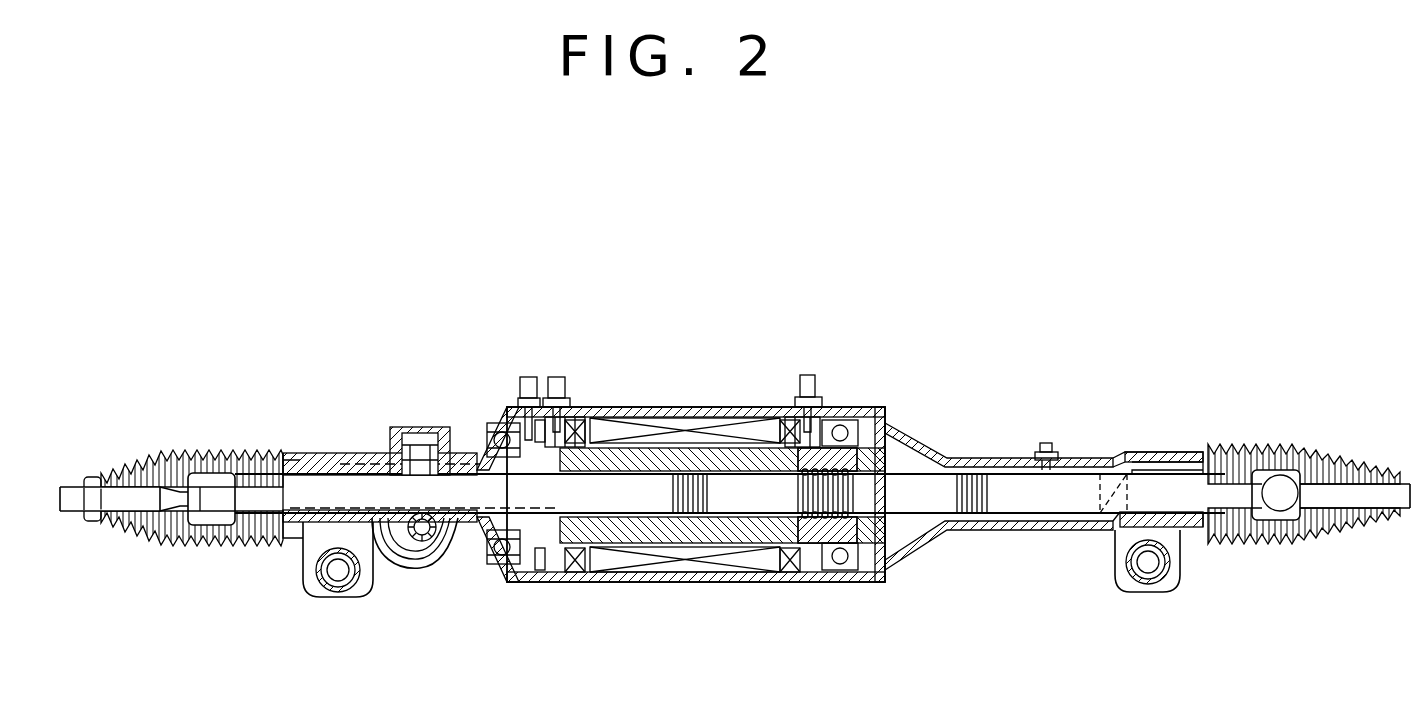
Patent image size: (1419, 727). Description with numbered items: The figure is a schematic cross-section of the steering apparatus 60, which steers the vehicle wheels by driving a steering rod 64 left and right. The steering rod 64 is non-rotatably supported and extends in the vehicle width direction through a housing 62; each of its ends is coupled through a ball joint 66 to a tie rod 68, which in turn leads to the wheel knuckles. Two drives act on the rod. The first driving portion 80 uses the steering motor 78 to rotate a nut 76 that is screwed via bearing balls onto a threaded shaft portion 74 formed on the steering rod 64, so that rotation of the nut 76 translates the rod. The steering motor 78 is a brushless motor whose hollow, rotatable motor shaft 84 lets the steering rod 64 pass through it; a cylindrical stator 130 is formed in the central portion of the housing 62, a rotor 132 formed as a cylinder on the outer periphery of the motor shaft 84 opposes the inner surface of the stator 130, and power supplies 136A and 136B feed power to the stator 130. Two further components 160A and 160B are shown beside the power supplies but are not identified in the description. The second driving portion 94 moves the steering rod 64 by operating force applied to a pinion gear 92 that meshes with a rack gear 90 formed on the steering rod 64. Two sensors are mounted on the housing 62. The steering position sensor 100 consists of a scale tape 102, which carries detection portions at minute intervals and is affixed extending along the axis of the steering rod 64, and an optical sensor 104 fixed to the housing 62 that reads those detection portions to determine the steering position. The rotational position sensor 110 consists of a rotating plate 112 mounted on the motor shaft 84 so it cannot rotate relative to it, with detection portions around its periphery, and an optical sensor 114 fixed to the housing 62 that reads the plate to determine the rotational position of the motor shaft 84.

The steering apparatus 60 is at (655, 271).
The housing 62 is at (672, 418).
The steering rod 64 is at (912, 451).
The ball joint 66 is at (190, 545).
The tie rod 68 is at (122, 530).
The threaded shaft portion 74 is at (921, 529).
The nut 76 is at (897, 575).
The steering motor 78 is at (721, 600).
The first driving portion 80 is at (708, 358).
The motor shaft 84 is at (560, 573).
The rack gear 90 is at (462, 560).
The pinion gear 92 is at (445, 552).
The second driving portion 94 is at (428, 580).
The steering position sensor 100 is at (1105, 420).
The scale tape 102 is at (1067, 463).
The optical sensor 104 is at (1043, 443).
The rotational position sensor 110 is at (504, 391).
The rotating plate 112 is at (538, 580).
The optical sensor 114 is at (530, 377).
The stator 130 is at (662, 573).
The rotor 132 is at (753, 573).
The power supply 136A is at (586, 385).
The power supply 136B is at (785, 381).
The power terminal 160A is at (553, 387).
The power terminal 160B is at (808, 378).